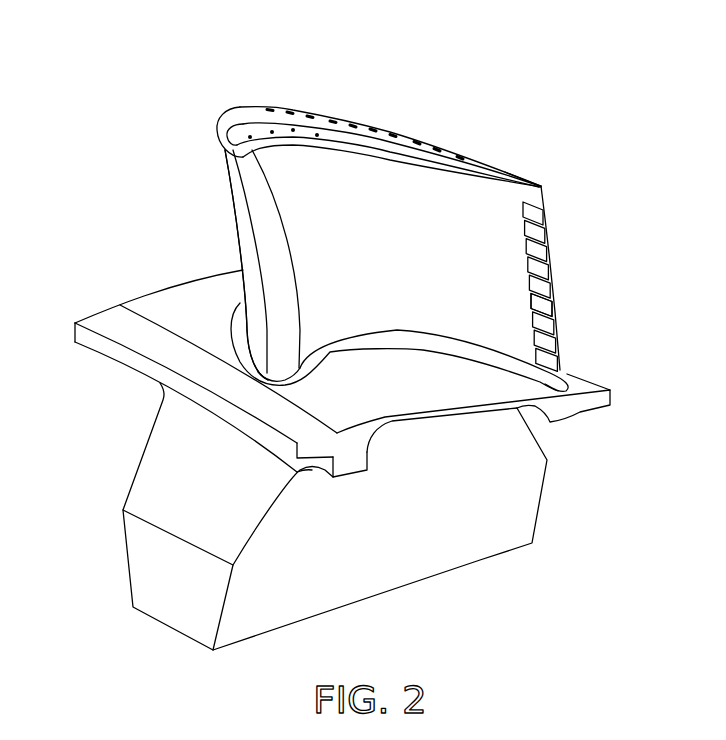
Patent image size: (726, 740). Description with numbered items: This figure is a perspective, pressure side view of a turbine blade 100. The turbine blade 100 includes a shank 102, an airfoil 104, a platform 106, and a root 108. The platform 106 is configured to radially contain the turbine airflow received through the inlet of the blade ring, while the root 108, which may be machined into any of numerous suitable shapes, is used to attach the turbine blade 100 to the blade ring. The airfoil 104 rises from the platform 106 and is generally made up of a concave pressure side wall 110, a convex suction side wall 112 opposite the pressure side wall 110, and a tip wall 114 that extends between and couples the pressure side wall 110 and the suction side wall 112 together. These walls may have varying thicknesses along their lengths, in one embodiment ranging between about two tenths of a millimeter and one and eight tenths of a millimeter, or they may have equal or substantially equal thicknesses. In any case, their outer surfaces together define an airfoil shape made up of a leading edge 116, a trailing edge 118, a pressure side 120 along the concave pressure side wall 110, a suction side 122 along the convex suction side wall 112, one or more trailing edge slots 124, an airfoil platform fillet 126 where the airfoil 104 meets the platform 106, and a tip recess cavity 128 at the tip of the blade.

The turbine blade 100 is at (599, 103).
The shank 102 is at (398, 430).
The airfoil 104 is at (418, 274).
The platform 106 is at (410, 396).
The root 108 is at (183, 457).
The pressure side wall 110 is at (425, 182).
The suction side wall 112 is at (253, 106).
The tip wall 114 is at (237, 140).
The leading edge 116 is at (256, 237).
The trailing edge 118 is at (557, 257).
The pressure side 120 is at (480, 200).
The suction side 122 is at (412, 146).
The trailing edge slots 124 is at (540, 305).
The airfoil platform fillet 126 is at (240, 322).
The tip recess cavity 128 is at (317, 133).